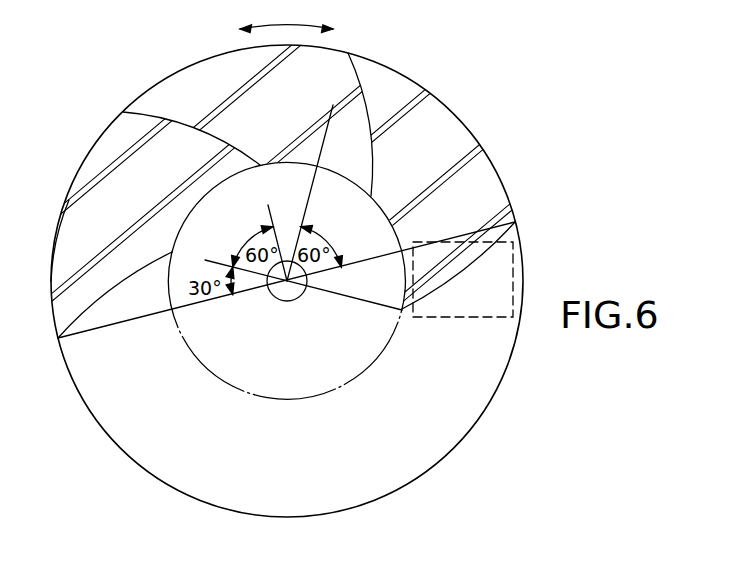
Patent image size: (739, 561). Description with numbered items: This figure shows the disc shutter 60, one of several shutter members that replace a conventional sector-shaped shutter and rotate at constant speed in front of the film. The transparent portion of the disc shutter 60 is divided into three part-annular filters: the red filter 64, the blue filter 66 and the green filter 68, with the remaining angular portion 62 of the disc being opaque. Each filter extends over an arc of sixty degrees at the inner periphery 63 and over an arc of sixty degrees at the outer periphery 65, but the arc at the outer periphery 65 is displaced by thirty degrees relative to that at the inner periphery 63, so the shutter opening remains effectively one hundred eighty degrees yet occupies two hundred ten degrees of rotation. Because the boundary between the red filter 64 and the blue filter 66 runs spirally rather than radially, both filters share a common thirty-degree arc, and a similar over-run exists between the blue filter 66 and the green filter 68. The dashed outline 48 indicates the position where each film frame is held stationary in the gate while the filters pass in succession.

The disc shutter 60 is at (450, 433).
The open sector of disc 62 is at (112, 412).
The inner periphery 63 is at (183, 223).
The red filter 64 is at (103, 155).
The outer periphery 65 is at (56, 236).
The blue filter 66 is at (203, 74).
The green filter 68 is at (453, 142).
The film frame position 48 is at (513, 260).